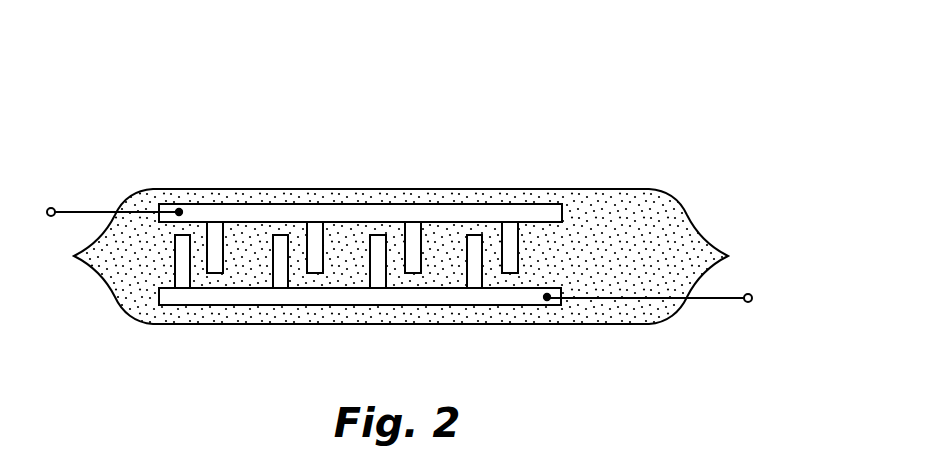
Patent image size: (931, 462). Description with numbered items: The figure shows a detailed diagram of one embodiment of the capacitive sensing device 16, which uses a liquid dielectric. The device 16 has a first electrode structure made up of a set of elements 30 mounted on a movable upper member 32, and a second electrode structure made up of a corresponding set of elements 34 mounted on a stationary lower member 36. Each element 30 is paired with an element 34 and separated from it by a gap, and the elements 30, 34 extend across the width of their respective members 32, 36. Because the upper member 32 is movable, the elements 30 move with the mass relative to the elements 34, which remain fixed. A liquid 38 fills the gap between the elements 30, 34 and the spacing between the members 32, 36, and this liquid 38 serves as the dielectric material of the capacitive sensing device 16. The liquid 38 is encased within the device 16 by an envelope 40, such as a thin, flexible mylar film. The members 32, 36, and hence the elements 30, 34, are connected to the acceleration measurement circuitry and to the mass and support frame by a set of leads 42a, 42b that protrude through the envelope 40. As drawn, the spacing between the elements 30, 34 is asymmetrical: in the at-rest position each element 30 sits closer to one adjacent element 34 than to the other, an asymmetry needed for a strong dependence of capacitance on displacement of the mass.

The capacitive sensing device 16 is at (422, 199).
The elements 30 is at (225, 248).
The movable upper member 32 is at (236, 203).
The elements 34 is at (190, 277).
The stationary lower member 36 is at (265, 297).
The liquid 38 is at (622, 205).
The envelope 40 is at (352, 189).
The lead 42a is at (90, 212).
The lead 42b is at (712, 299).